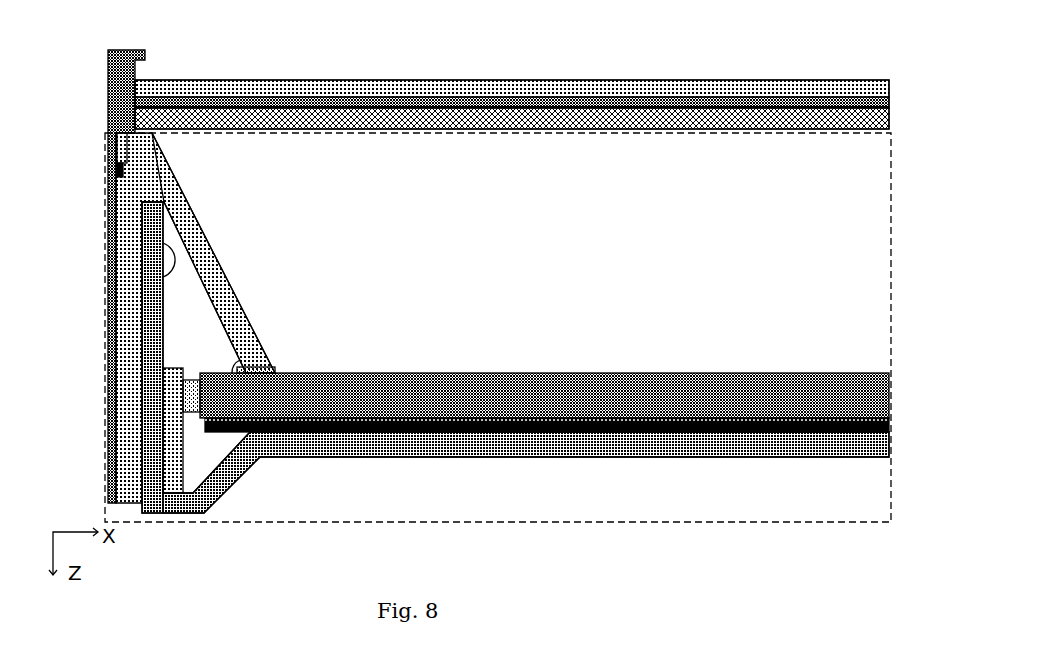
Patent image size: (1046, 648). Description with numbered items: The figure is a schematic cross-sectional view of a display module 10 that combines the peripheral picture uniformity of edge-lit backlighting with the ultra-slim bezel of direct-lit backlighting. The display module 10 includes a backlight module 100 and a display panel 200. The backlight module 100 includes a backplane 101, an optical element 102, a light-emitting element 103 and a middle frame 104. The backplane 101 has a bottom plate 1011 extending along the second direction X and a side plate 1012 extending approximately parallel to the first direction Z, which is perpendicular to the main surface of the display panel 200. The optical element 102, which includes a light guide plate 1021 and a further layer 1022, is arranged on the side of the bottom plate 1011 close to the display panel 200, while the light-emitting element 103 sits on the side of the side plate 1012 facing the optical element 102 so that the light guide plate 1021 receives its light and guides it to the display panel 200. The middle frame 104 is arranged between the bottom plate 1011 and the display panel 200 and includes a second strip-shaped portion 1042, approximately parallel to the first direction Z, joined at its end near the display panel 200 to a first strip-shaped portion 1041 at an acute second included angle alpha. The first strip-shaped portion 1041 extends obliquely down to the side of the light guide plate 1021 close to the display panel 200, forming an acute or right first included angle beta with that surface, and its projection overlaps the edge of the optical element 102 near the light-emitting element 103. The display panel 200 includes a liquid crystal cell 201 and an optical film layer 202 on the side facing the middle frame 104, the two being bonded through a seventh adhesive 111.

The display module 10 is at (517, 566).
The backlight module 100 is at (105, 168).
The backplane 101 is at (448, 357).
The bottom plate 1011 is at (432, 442).
The side plate 1012 is at (147, 340).
The optical element 102 is at (544, 355).
The light guide plate 1021 is at (428, 385).
The backing layer 1022 is at (467, 320).
The light-emitting element 103 is at (188, 397).
The middle frame 104 is at (182, 318).
The first strip-shaped portion 1041 is at (225, 333).
The second strip-shaped portion 1042 is at (111, 251).
The seventh adhesive 111 is at (422, 100).
The display panel 200 is at (512, 83).
The liquid crystal cell 201 is at (592, 95).
The optical film layer 202 is at (697, 122).